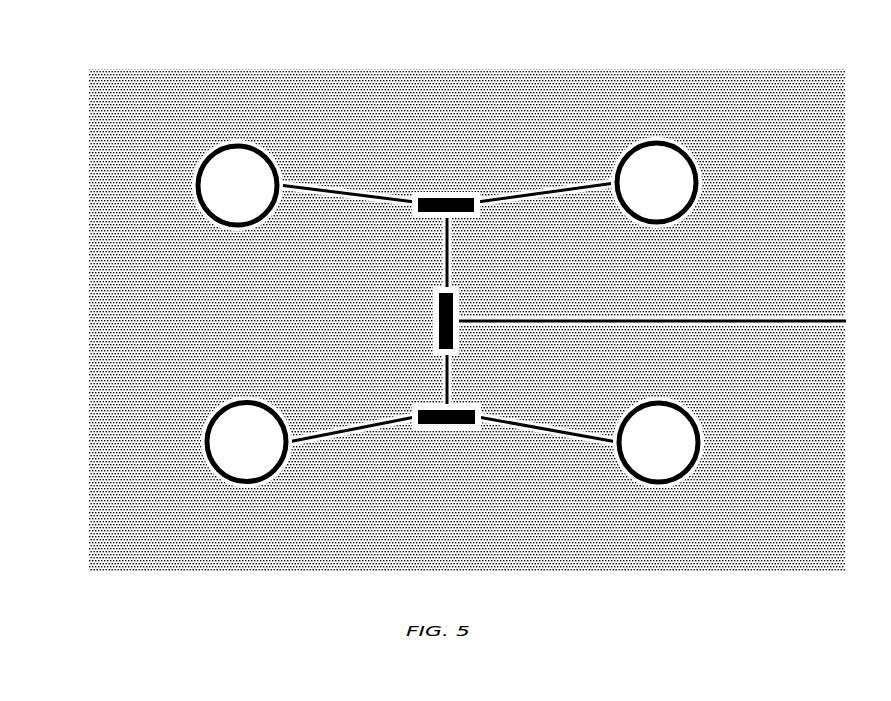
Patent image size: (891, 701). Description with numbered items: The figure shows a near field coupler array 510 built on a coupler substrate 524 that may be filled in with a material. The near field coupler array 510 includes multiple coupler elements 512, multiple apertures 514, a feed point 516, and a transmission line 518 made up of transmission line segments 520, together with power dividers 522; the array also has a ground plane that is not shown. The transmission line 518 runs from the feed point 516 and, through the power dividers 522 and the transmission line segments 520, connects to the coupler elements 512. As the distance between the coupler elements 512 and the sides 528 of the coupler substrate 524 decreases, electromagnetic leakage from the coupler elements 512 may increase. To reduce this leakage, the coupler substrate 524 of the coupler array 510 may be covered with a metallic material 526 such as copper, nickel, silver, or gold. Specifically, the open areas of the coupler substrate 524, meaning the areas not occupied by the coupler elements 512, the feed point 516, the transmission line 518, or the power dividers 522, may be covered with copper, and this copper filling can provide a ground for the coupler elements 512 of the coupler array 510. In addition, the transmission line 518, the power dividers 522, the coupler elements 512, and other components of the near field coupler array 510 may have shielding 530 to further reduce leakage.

The near field coupler array 510 is at (456, 38).
The coupler elements 512 is at (228, 136).
The apertures 514 is at (203, 206).
The feed point 516 is at (838, 313).
The transmission line 518 is at (649, 295).
The transmission line segments 520 is at (338, 183).
The power dividers 522 is at (437, 186).
The coupler substrate 524 is at (309, 60).
The metallic material 526 is at (153, 180).
The sides 528 is at (433, 68).
The shielding 530 is at (191, 155).